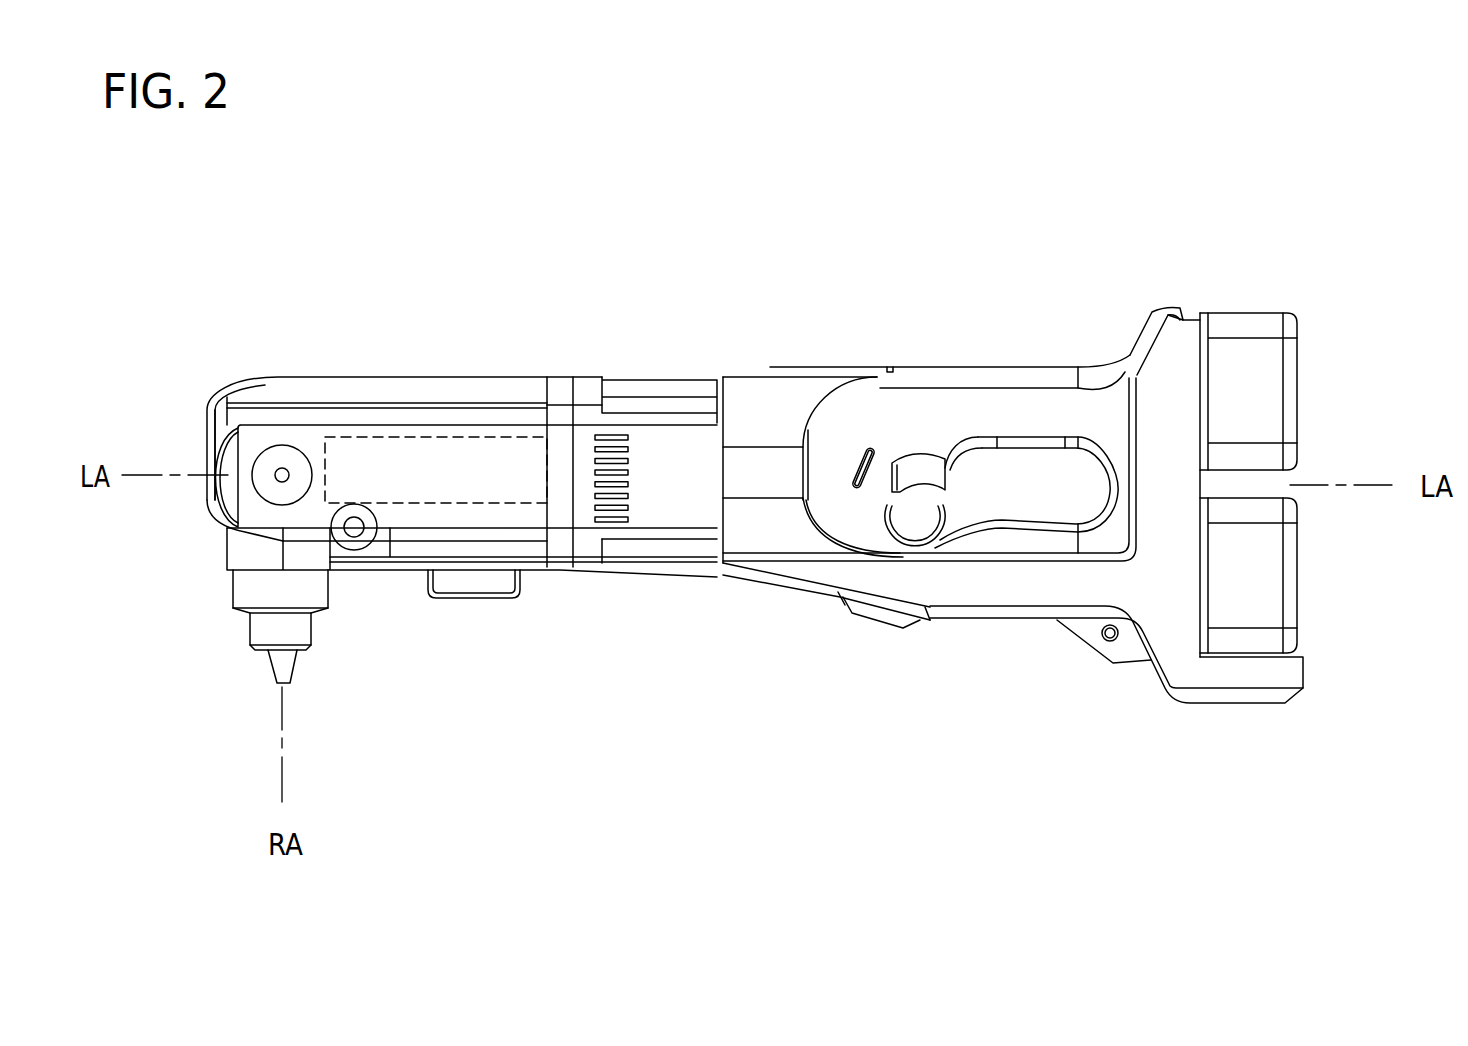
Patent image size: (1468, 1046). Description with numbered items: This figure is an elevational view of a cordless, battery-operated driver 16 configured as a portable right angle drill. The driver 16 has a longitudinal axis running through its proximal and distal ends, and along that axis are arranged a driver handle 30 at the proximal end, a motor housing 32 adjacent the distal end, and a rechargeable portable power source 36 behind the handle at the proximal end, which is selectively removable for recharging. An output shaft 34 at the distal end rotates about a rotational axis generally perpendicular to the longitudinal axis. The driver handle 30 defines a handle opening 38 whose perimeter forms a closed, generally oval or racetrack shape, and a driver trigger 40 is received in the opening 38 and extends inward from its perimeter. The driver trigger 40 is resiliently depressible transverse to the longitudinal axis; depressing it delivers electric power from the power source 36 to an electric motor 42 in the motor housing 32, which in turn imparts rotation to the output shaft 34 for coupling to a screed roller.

The driver 16 is at (981, 160).
The driver handle 30 is at (990, 378).
The motor housing 32 is at (437, 385).
The output shaft 34 is at (297, 663).
The portable power source 36 is at (1253, 323).
The handle opening 38 is at (1021, 491).
The driver trigger 40 is at (918, 476).
The electric motor 42 is at (357, 437).